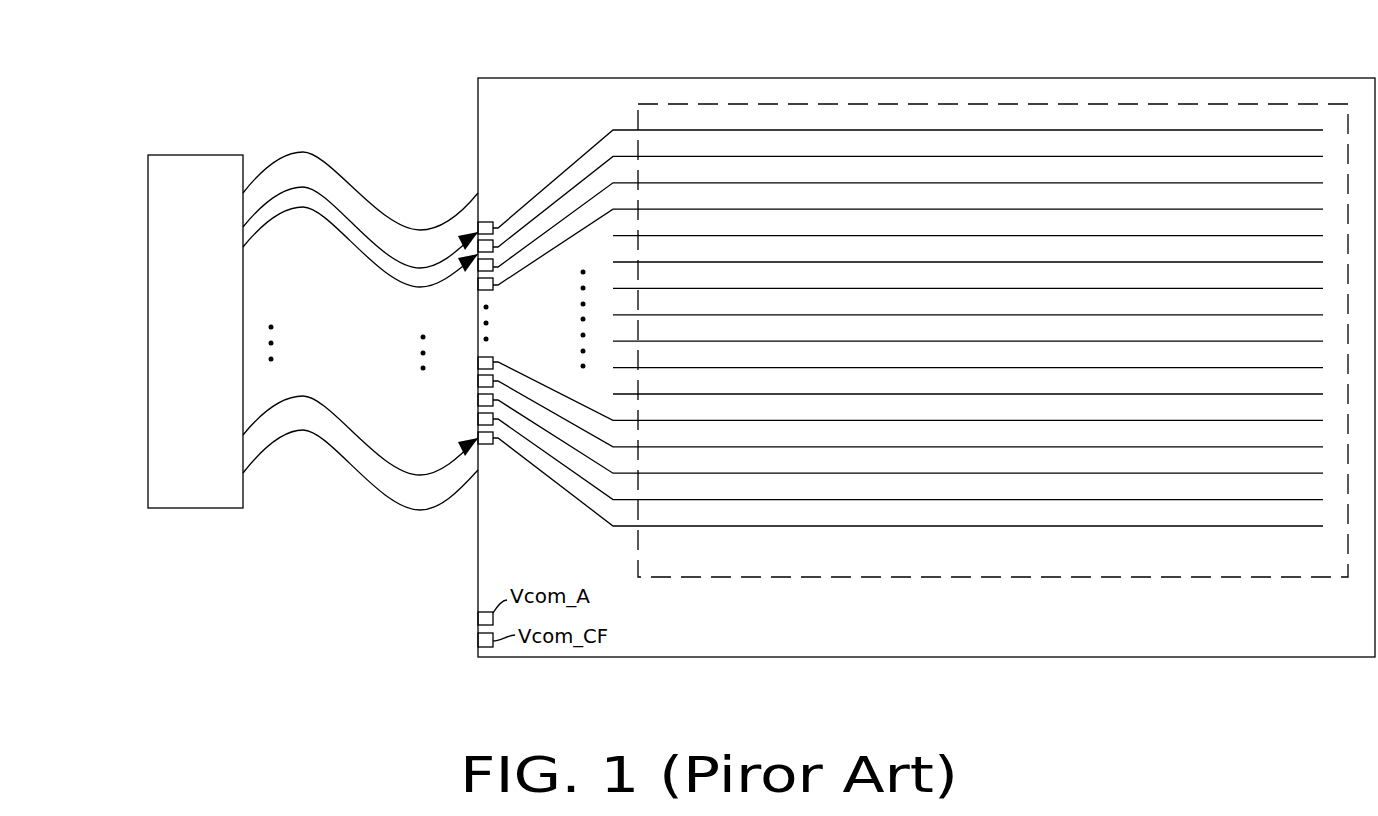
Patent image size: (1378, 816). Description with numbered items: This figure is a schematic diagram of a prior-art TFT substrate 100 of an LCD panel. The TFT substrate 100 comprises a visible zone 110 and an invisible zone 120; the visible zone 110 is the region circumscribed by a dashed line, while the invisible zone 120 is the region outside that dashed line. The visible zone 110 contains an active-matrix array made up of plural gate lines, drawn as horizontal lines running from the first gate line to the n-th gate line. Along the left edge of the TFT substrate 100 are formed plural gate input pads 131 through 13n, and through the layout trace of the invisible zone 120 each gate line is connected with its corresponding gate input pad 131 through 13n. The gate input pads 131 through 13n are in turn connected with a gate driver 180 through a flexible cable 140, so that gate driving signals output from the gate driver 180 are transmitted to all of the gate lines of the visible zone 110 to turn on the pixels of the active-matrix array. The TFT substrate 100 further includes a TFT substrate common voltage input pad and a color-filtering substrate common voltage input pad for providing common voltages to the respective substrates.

The TFT substrate 100 is at (1228, 77).
The visible zone 110 is at (1050, 108).
The invisible zone 120 is at (940, 85).
The gate input pad 131 is at (483, 221).
The gate input pad 13n is at (485, 446).
The flexible cable 140 is at (303, 157).
The gate driver 180 is at (195, 160).